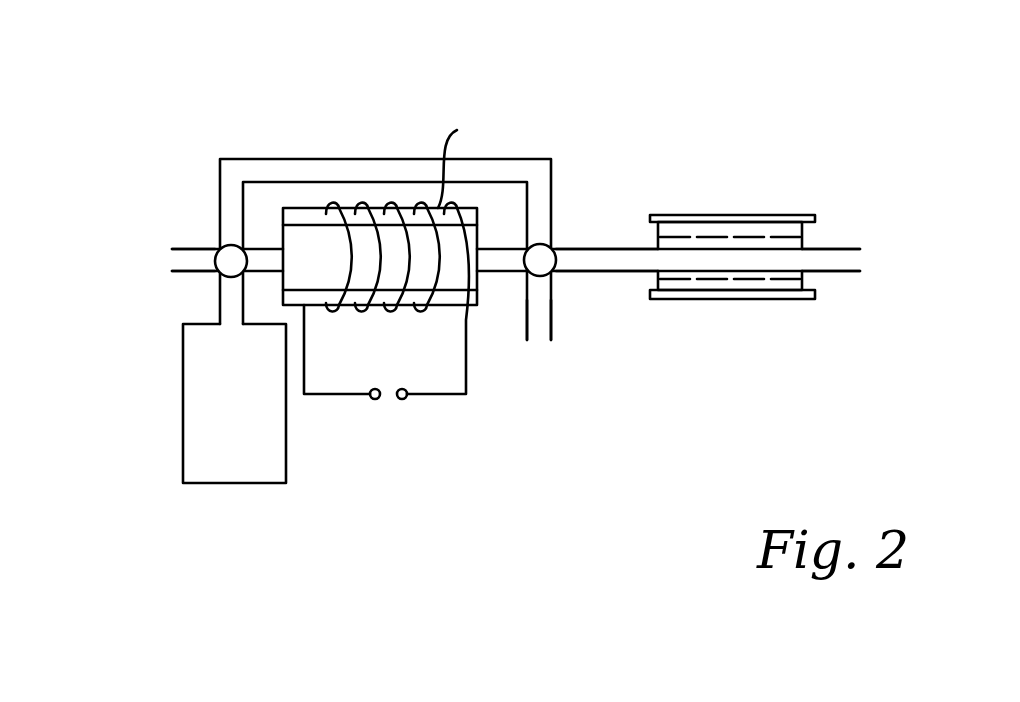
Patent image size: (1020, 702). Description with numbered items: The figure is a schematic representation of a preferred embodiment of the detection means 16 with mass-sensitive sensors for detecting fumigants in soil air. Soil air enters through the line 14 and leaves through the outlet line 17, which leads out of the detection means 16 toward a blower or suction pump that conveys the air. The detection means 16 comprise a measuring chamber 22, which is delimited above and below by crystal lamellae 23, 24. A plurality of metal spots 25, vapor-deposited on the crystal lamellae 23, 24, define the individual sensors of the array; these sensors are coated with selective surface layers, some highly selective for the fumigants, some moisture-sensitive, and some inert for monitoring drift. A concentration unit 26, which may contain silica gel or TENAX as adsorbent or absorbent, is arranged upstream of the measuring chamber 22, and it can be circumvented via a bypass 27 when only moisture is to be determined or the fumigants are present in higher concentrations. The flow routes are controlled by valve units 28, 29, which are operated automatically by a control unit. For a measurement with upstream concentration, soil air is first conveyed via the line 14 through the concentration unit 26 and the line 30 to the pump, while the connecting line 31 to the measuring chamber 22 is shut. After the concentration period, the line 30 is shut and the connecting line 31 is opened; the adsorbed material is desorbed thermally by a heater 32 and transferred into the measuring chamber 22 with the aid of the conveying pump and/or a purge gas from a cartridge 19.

The detection means 16 is at (207, 110).
The line 14 is at (197, 260).
The outlet line 17 is at (838, 255).
The cartridge 19 is at (217, 412).
The measuring chamber 22 is at (732, 314).
The crystal lamella 23 is at (757, 230).
The crystal lamella 24 is at (758, 287).
The metal spots 25 is at (680, 232).
The concentration unit 26 is at (512, 408).
The bypass 27 is at (377, 168).
The valve unit 28 is at (229, 264).
The valve unit 29 is at (540, 262).
The line 30 is at (542, 323).
The connecting line 31 is at (603, 255).
The heater 32 is at (460, 151).